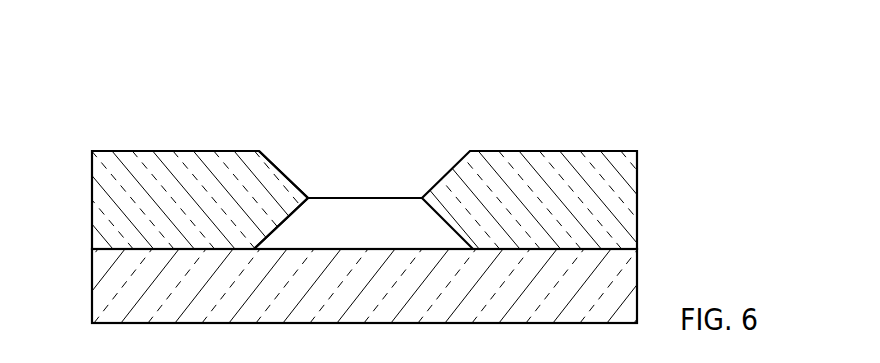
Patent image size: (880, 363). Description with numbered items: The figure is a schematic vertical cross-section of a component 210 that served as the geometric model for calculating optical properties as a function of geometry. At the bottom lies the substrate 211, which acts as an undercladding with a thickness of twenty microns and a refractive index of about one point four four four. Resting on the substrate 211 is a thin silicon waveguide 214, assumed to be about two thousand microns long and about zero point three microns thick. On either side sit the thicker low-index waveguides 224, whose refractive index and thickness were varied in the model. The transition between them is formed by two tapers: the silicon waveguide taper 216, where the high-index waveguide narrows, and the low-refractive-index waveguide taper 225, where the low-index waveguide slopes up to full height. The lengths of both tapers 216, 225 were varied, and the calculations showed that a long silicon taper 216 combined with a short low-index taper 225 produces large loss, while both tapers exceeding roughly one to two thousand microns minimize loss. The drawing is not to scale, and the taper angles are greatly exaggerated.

The component 210 is at (93, 101).
The substrate 211 is at (115, 283).
The silicon waveguide 214 is at (385, 215).
The silicon waveguide taper 216 is at (280, 220).
The low-index waveguides 224 is at (115, 208).
The low-refractive index waveguide taper 225 is at (285, 172).